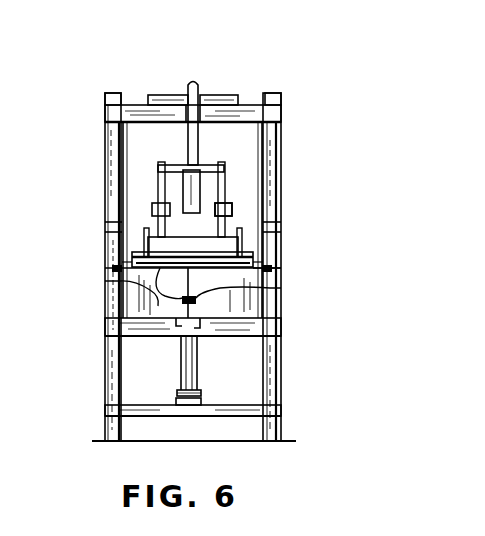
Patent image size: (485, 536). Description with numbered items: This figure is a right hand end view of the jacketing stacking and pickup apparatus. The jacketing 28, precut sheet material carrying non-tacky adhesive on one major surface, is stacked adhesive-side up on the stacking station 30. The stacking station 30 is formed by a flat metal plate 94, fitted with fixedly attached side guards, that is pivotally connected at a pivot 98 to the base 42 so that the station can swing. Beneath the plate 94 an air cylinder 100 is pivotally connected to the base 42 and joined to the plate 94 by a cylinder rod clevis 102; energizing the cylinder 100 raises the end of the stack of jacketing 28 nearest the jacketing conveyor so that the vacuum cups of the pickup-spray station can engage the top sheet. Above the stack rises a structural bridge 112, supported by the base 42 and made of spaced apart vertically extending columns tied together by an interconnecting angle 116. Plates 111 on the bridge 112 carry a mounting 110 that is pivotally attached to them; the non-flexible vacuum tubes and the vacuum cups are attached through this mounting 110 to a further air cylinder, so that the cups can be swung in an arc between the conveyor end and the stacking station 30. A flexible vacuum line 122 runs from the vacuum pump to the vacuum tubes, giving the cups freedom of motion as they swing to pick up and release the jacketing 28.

The stacking station 30 is at (173, 38).
The base 42 is at (197, 242).
The structural bridge 112 is at (110, 91).
The interconnecting angle 116 is at (252, 106).
The flexible vacuum line 122 is at (190, 86).
The plates 111 is at (199, 98).
The mounting 110 is at (198, 195).
The jacketing 28 is at (207, 240).
The flat metal plate 94 is at (140, 300).
The pivotal connection 98 is at (186, 292).
The cylinder rod clevis 102 is at (281, 289).
The air cylinder 100 is at (192, 364).